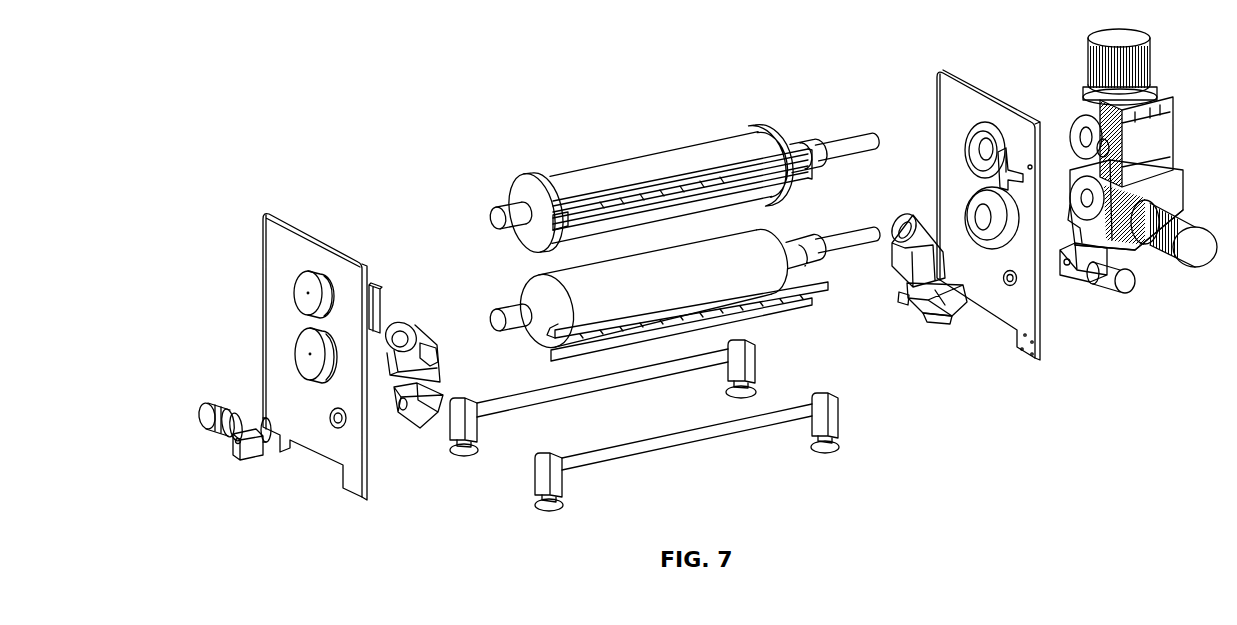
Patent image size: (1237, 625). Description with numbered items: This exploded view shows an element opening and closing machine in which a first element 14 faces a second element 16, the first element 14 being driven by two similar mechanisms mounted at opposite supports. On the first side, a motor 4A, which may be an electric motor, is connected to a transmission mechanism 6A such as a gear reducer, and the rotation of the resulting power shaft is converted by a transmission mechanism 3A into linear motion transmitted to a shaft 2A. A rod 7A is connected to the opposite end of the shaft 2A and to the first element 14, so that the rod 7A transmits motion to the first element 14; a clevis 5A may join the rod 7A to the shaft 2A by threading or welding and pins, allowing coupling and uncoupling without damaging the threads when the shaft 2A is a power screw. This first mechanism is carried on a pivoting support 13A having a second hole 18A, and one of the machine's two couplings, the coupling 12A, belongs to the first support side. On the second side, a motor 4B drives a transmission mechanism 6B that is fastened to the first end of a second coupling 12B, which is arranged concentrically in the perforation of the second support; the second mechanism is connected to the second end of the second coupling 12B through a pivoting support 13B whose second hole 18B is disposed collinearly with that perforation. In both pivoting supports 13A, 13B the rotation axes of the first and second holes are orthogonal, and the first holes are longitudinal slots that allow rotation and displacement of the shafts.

The second hole 18B is at (297, 234).
The second coupling 12B is at (340, 428).
The motor 4B is at (203, 412).
The transmission mechanism 6B is at (233, 452).
The pivoting support 13B is at (430, 423).
The second element 16 is at (653, 171).
The first element 14 is at (684, 291).
The clevis 5A is at (878, 246).
The rod 7A is at (883, 228).
The transmission mechanism 3A is at (905, 299).
The shaft 2A is at (940, 312).
The pivoting support 13A is at (949, 325).
The second hole 18A is at (982, 100).
The first mounting hole 12A is at (1004, 287).
The motor 4A is at (1133, 277).
The transmission mechanism 6A is at (1067, 272).